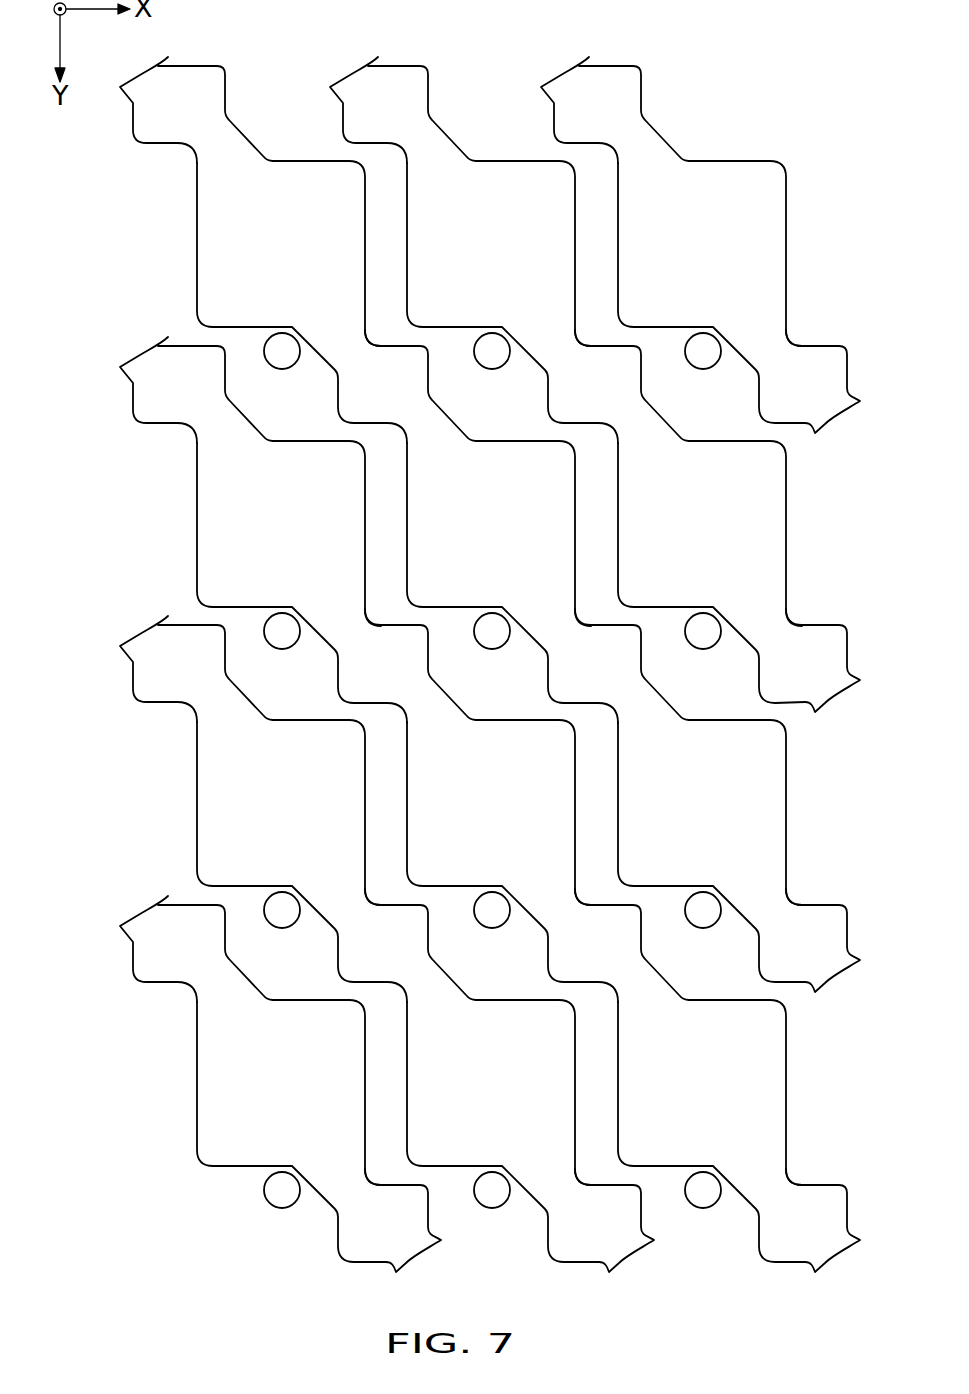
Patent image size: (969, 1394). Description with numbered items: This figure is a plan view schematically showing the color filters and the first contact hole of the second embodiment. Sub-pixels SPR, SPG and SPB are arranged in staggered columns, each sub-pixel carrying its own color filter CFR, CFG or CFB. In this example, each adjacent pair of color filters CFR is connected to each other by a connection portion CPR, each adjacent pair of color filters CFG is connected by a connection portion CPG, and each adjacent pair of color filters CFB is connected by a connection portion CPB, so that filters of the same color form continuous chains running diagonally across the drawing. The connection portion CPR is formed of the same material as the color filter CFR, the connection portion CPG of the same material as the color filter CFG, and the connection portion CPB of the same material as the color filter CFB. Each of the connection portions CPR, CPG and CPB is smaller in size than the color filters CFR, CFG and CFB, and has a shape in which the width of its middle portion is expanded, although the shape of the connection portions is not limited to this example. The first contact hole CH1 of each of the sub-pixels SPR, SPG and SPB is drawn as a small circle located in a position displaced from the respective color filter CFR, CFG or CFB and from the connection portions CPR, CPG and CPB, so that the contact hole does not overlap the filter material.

The connection portion CPR is at (226, 90).
The connection portion CPG is at (429, 90).
The connection portion CPB is at (642, 90).
The color filter CFR is at (283, 160).
The color filter CFG is at (493, 160).
The color filter CFB is at (704, 160).
The sub-pixel SPR is at (305, 256).
The sub-pixel SPG is at (515, 256).
The sub-pixel SPB is at (726, 256).
The first contact hole CH1 is at (282, 332).